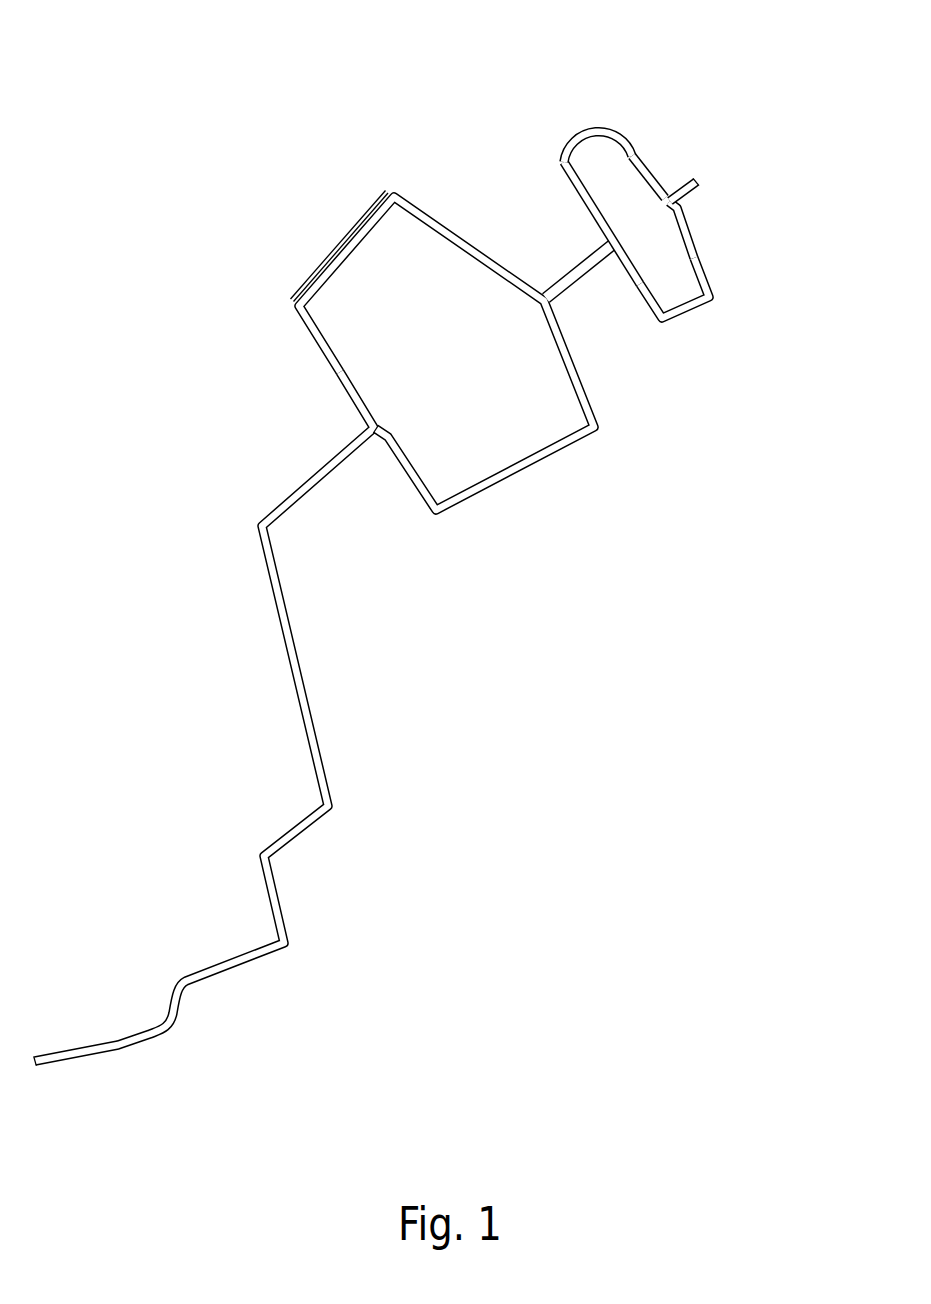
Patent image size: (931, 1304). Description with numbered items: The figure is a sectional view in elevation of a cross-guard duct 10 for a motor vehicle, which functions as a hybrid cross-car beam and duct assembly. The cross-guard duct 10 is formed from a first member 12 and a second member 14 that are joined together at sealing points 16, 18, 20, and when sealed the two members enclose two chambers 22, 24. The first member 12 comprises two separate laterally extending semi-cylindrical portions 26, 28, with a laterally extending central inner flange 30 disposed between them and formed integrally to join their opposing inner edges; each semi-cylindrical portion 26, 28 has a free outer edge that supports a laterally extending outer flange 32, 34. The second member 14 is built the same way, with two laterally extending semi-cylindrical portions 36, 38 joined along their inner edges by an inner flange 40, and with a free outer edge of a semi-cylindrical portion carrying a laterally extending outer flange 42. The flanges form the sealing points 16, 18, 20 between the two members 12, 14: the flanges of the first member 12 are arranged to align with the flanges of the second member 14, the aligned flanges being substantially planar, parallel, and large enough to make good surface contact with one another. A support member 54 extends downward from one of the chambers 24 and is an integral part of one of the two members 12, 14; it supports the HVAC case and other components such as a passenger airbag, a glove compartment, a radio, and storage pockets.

The cross-guard duct 10 is at (234, 172).
The first member 12 is at (563, 57).
The second member 14 is at (534, 667).
The sealing point 16 is at (746, 161).
The sealing point 18 is at (686, 358).
The sealing point 20 is at (312, 406).
The chamber 22 is at (590, 161).
The chamber 24 is at (345, 314).
The semi-cylindrical portion 26 is at (595, 140).
The semi-cylindrical portion 28 is at (388, 192).
The inner flange 30 is at (572, 270).
The outer flange 32 is at (677, 177).
The outer flange 34 is at (365, 431).
The semi-cylindrical portion 36 is at (717, 297).
The semi-cylindrical portion 38 is at (537, 473).
The inner flange 40 is at (577, 307).
The outer flange 42 is at (690, 197).
The support member 54 is at (284, 902).